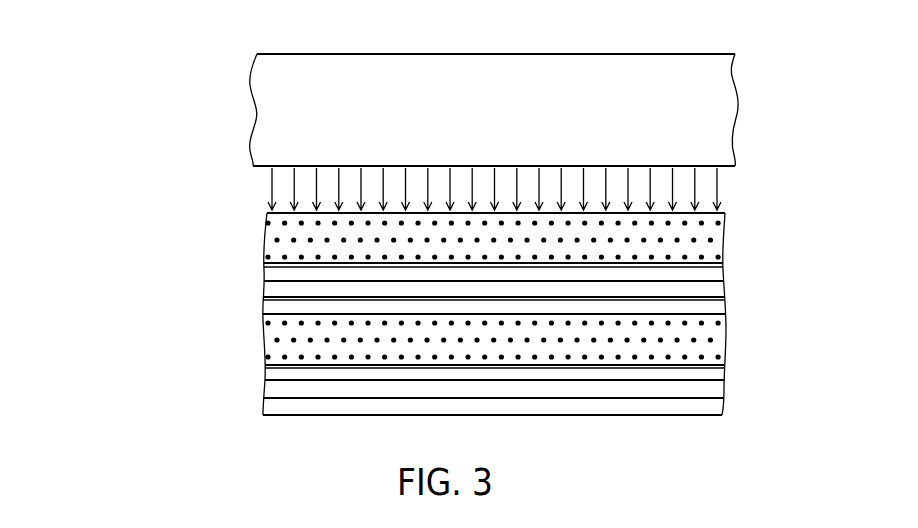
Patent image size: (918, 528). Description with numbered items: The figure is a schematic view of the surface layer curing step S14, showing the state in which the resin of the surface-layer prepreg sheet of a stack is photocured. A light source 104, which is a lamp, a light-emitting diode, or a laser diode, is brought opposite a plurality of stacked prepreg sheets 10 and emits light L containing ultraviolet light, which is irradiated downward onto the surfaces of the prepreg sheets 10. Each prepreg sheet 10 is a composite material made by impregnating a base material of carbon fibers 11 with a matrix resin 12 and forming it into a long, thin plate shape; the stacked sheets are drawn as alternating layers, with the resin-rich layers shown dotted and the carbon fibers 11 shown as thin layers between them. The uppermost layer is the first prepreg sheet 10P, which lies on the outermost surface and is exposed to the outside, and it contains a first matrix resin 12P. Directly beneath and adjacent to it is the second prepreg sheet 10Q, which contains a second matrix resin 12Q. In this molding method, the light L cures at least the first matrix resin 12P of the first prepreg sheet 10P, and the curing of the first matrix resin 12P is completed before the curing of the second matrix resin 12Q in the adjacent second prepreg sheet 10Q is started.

The step S14 (irradiation step) S14 is at (47, 14).
The light source 104 is at (728, 70).
The light L is at (272, 196).
The prepreg sheet 10 is at (718, 340).
The first prepreg sheet 10P is at (718, 240).
The second prepreg sheet 10Q is at (718, 290).
The first matrix resin 12P is at (268, 236).
The second matrix resin 12Q is at (275, 287).
The carbon fibers 11 is at (268, 257).
The matrix resin 12 is at (498, 339).